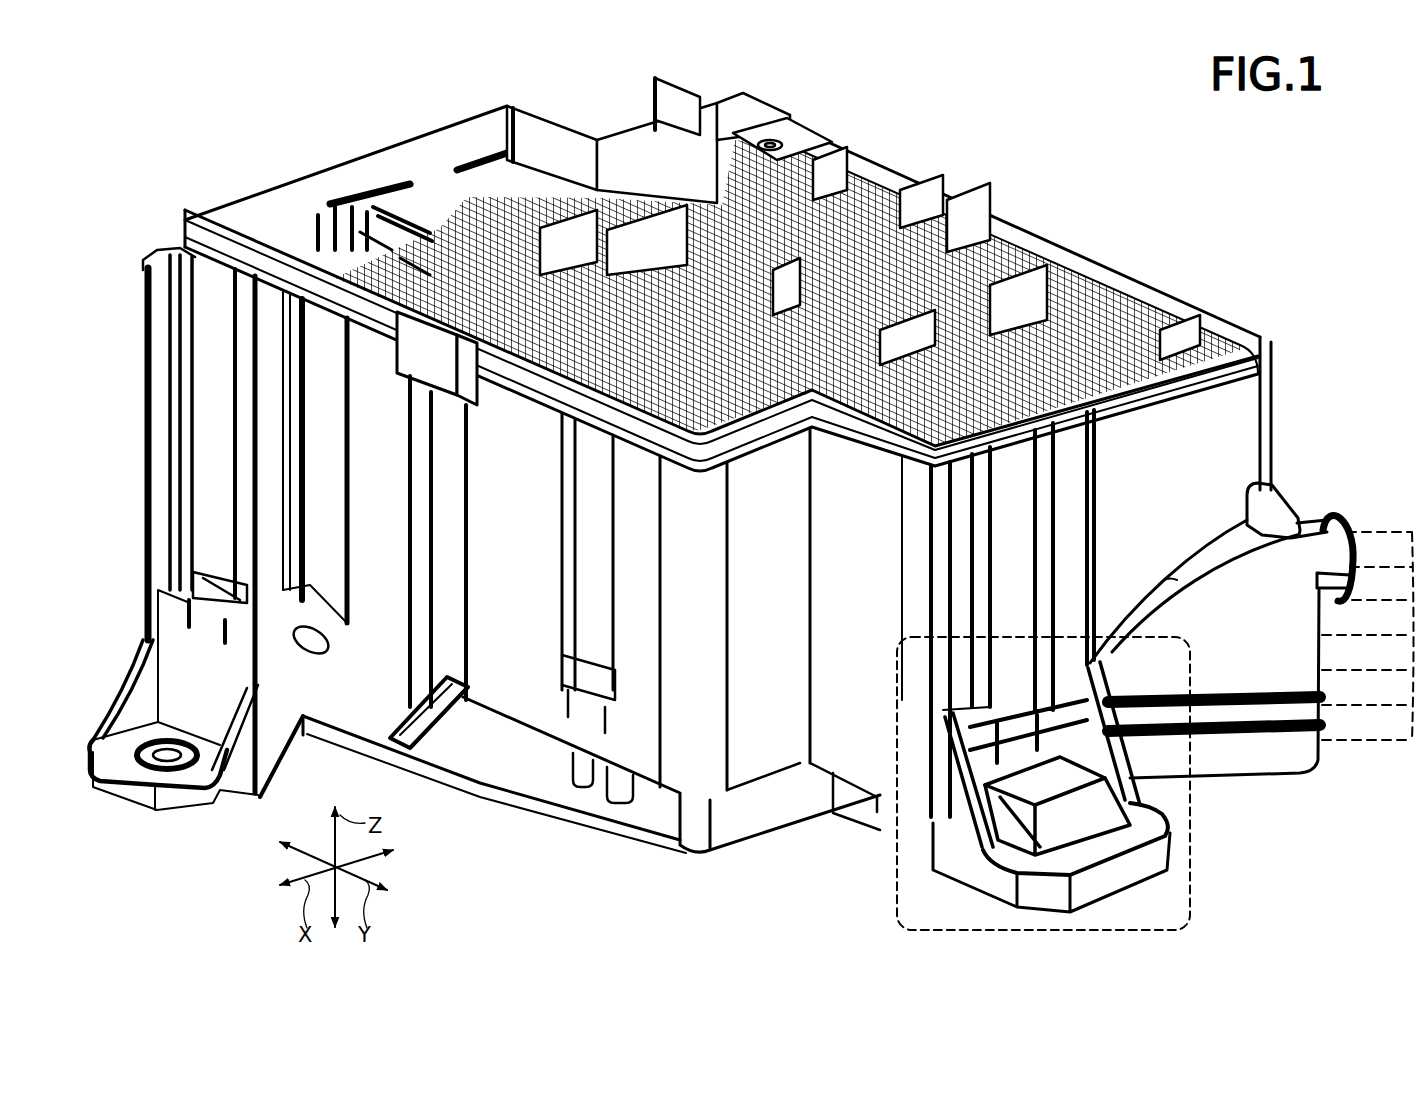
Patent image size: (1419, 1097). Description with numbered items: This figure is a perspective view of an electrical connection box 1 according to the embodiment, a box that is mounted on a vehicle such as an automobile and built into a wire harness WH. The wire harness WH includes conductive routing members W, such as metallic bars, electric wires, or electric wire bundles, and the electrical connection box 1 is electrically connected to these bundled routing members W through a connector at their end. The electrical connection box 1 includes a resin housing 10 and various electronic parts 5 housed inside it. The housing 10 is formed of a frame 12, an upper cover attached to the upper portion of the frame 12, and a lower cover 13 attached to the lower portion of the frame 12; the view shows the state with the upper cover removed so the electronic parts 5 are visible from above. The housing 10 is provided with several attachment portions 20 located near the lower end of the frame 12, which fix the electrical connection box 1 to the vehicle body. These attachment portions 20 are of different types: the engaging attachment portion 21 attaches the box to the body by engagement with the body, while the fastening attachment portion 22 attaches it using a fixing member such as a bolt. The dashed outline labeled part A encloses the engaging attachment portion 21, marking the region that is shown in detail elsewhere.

The housing 10 is at (262, 132).
The electronic parts 5 is at (1086, 272).
The frame 12 is at (755, 722).
The lower cover 13 is at (480, 748).
The attachment portions 20 is at (687, 596).
The engaging attachment portion 21 is at (1133, 905).
The fastening attachment portion 22 is at (168, 822).
The electrical connection box 1 is at (1300, 445).
The wire harness WH is at (1395, 347).
The routing members W is at (1381, 522).
The part A is at (1193, 870).